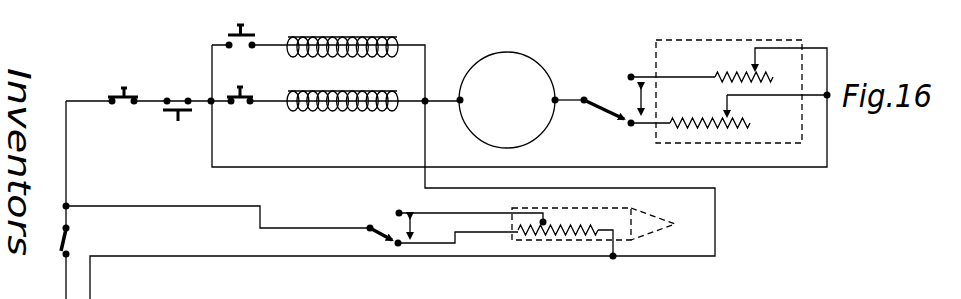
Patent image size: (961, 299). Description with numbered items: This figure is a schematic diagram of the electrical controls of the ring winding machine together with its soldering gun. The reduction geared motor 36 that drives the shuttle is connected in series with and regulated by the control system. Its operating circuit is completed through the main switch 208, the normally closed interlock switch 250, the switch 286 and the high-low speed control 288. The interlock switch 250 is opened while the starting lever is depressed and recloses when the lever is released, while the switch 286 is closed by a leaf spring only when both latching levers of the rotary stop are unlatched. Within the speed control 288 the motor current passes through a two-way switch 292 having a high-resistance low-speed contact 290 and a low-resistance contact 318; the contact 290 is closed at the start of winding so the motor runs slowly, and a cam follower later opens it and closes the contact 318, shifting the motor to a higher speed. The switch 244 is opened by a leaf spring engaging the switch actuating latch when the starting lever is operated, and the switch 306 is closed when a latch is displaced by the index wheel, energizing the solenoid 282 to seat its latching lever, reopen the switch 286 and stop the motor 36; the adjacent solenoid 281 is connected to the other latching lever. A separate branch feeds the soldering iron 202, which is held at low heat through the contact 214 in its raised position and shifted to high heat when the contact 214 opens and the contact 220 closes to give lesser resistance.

The reduction geared motor 36 is at (515, 53).
The soldering iron 202 is at (614, 207).
The main switch 208 is at (58, 245).
The contact 214 is at (396, 245).
The contact 220 is at (398, 210).
The switch 244 is at (242, 93).
The normally closed interlock switch 250 is at (119, 94).
The solenoid 281 is at (340, 90).
The solenoid 282 is at (334, 34).
The switch 286 is at (171, 116).
The high-low speed control 288 is at (747, 40).
The low-speed contact 290 is at (629, 127).
The two-way switch 292 is at (614, 108).
The switch 306 is at (239, 33).
The low-resistance contact 318 is at (631, 74).